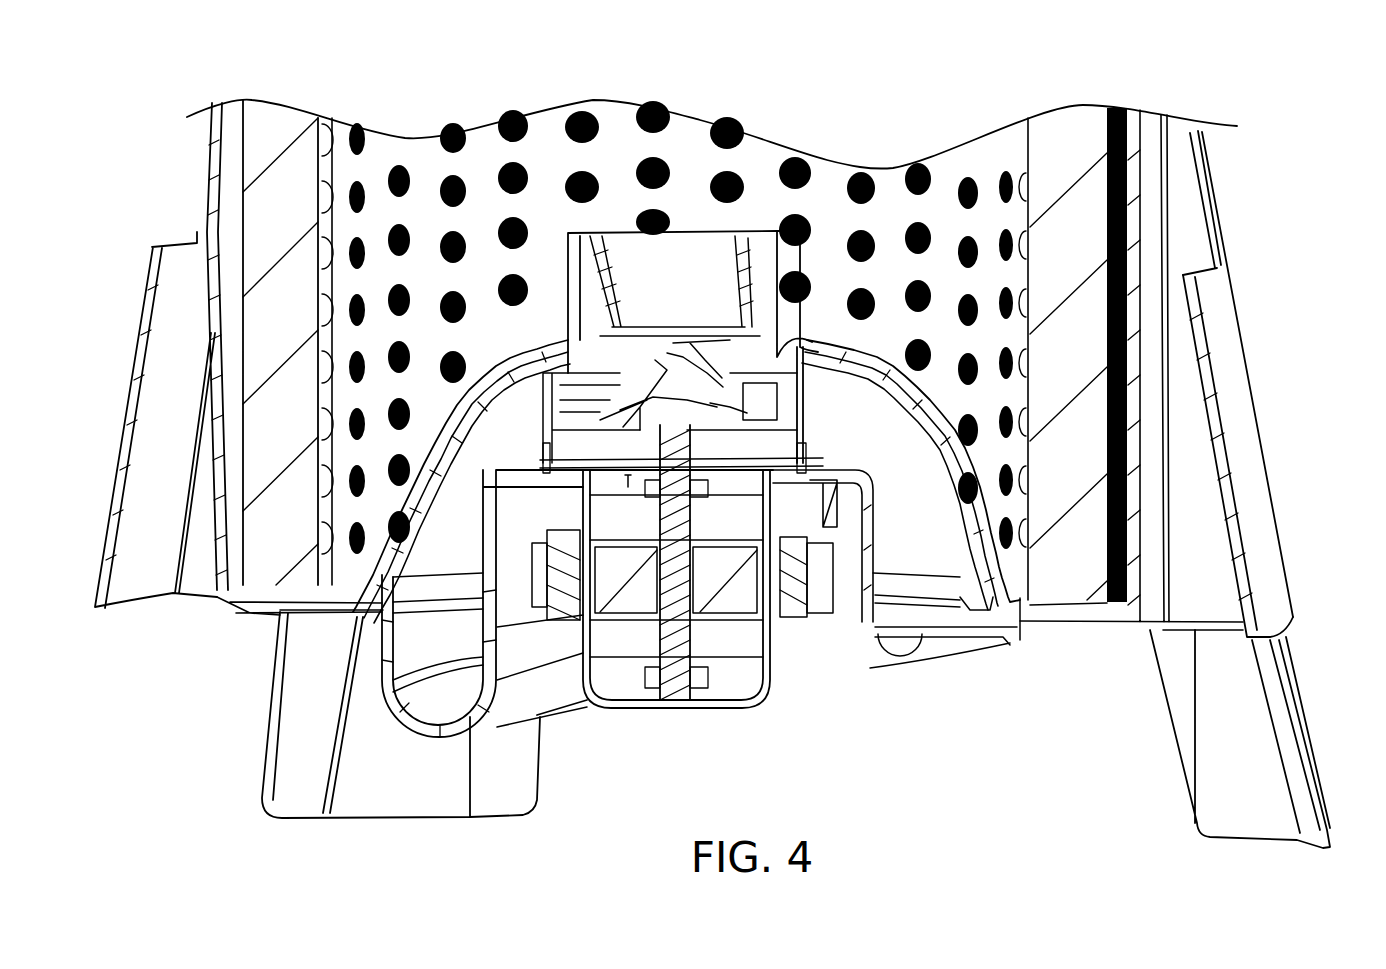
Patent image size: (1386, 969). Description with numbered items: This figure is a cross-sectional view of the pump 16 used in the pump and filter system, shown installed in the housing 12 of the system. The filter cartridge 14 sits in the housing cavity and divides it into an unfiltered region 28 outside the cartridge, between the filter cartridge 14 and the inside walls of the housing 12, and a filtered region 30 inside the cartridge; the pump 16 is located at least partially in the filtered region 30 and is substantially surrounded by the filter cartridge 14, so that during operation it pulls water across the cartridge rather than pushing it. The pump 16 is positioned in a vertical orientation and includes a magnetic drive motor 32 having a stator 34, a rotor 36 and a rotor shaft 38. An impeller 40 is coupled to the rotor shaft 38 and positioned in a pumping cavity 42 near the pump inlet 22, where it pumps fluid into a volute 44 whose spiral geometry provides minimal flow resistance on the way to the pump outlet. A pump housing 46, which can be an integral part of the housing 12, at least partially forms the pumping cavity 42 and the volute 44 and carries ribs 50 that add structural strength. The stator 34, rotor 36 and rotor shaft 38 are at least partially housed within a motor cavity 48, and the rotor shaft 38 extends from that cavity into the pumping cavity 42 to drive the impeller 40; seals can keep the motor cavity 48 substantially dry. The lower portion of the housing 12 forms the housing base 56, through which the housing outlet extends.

The housing 12 is at (1216, 154).
The filter cartridge 14 is at (1070, 223).
The pump 16 is at (496, 365).
The pump inlet 22 is at (686, 287).
The unfiltered region 28 is at (1125, 257).
The filtered region 30 is at (983, 337).
The magnetic drive motor 32 is at (816, 631).
The stator 34 is at (791, 623).
The rotor 36 is at (723, 613).
The rotor shaft 38 is at (675, 700).
The impeller 40 is at (672, 375).
The pumping cavity 42 is at (700, 343).
The volute 44 is at (452, 545).
The pump housing 46 is at (940, 468).
The motor cavity 48 is at (532, 514).
The ribs 50 is at (922, 402).
The housing base 56 is at (1250, 517).